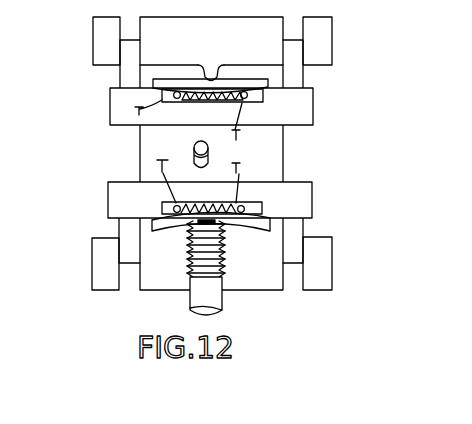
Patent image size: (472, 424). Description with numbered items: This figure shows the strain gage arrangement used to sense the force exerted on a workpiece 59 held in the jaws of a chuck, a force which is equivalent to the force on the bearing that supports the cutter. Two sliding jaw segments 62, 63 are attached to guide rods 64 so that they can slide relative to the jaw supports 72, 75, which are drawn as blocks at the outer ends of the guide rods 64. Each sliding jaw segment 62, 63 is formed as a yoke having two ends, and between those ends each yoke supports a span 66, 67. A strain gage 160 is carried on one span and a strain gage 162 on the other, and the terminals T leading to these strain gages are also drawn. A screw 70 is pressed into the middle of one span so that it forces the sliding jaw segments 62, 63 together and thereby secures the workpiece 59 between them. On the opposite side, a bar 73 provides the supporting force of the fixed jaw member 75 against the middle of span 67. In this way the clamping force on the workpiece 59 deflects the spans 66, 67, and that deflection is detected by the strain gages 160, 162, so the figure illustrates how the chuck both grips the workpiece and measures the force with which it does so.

The workpiece 59 is at (270, 168).
The sliding jaw segment 62 is at (303, 107).
The sliding jaw segment 63 is at (303, 191).
The guide rods 64 is at (127, 82).
The span 66 is at (161, 226).
The span 67 is at (163, 78).
The screw 70 is at (218, 302).
The jaw support 72 is at (323, 278).
The bar 73 is at (210, 75).
The jaw support / fixed jaw member 75 is at (322, 33).
The strain gage 160 is at (185, 103).
The strain gage 162 is at (190, 213).